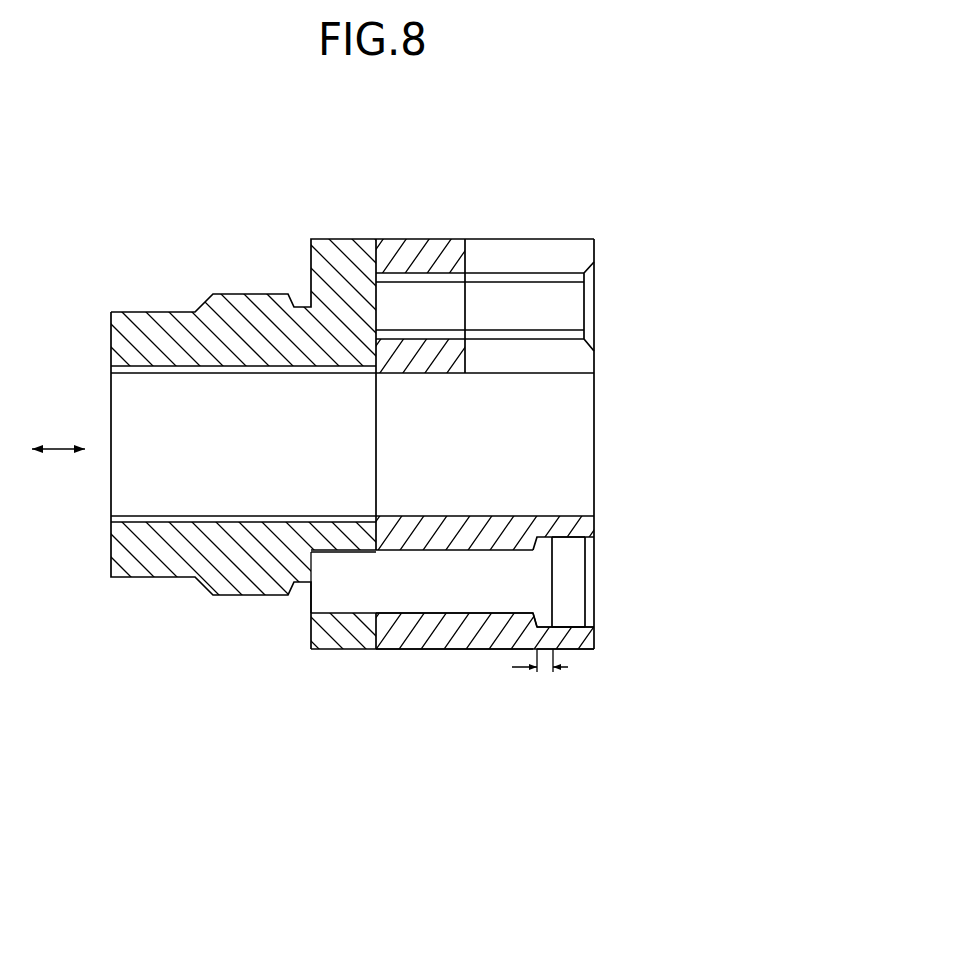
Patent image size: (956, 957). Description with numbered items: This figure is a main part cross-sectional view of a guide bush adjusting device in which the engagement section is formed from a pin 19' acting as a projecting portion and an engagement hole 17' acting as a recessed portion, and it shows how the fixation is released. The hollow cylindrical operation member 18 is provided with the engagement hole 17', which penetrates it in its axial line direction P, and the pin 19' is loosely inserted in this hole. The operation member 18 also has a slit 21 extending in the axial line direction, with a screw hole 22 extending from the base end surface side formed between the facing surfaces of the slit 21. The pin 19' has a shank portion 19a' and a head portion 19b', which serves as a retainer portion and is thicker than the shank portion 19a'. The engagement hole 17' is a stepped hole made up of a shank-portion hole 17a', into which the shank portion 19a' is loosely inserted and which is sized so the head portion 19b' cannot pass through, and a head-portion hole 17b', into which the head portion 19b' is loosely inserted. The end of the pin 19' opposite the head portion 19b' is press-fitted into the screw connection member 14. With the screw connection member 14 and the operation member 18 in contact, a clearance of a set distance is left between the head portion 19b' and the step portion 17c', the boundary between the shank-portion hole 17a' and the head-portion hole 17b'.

The screw connection member 14 is at (239, 574).
The operation member 18 is at (488, 522).
The slit 21 is at (492, 256).
The screw hole 22 is at (548, 315).
The pin 19' is at (518, 629).
The shank portion 19a' is at (343, 647).
The head portion 19b' is at (639, 582).
The engagement hole 17' is at (503, 670).
The shank-portion hole 17a' is at (454, 691).
The head-portion hole 17b' is at (568, 704).
The step portion 17c' is at (629, 605).
The axial line direction P is at (60, 450).